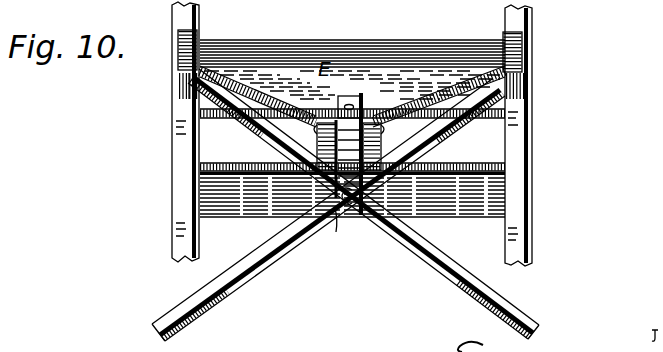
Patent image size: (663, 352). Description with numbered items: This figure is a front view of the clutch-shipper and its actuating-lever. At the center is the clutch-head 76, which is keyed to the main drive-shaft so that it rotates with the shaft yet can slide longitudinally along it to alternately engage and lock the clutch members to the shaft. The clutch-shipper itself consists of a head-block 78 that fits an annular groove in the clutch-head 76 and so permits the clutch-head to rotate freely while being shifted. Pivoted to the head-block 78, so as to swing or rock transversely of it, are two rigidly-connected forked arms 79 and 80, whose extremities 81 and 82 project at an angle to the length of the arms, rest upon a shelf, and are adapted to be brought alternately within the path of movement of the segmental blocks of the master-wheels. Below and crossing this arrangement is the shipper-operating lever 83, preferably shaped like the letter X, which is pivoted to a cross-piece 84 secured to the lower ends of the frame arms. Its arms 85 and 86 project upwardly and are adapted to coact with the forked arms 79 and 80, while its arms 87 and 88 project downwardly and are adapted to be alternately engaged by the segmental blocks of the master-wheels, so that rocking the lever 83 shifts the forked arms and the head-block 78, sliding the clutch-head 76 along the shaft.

The clutch-head 76 is at (333, 223).
The head-block 78 is at (343, 212).
The forked arm 79 is at (250, 88).
The forked arm 80 is at (439, 73).
The extremity of forked arm 81 is at (198, 34).
The extremity of forked arm 82 is at (530, 41).
The shipper-operating lever 83 is at (328, 212).
The cross-piece 84 is at (245, 207).
The upwardly projecting arm of shipper-operating lever 85 is at (267, 137).
The upwardly projecting arm of shipper-operating lever 86 is at (437, 138).
The downwardly projecting arm of shipper-operating lever 87 is at (197, 317).
The downwardly projecting arm of shipper-operating lever 88 is at (363, 204).